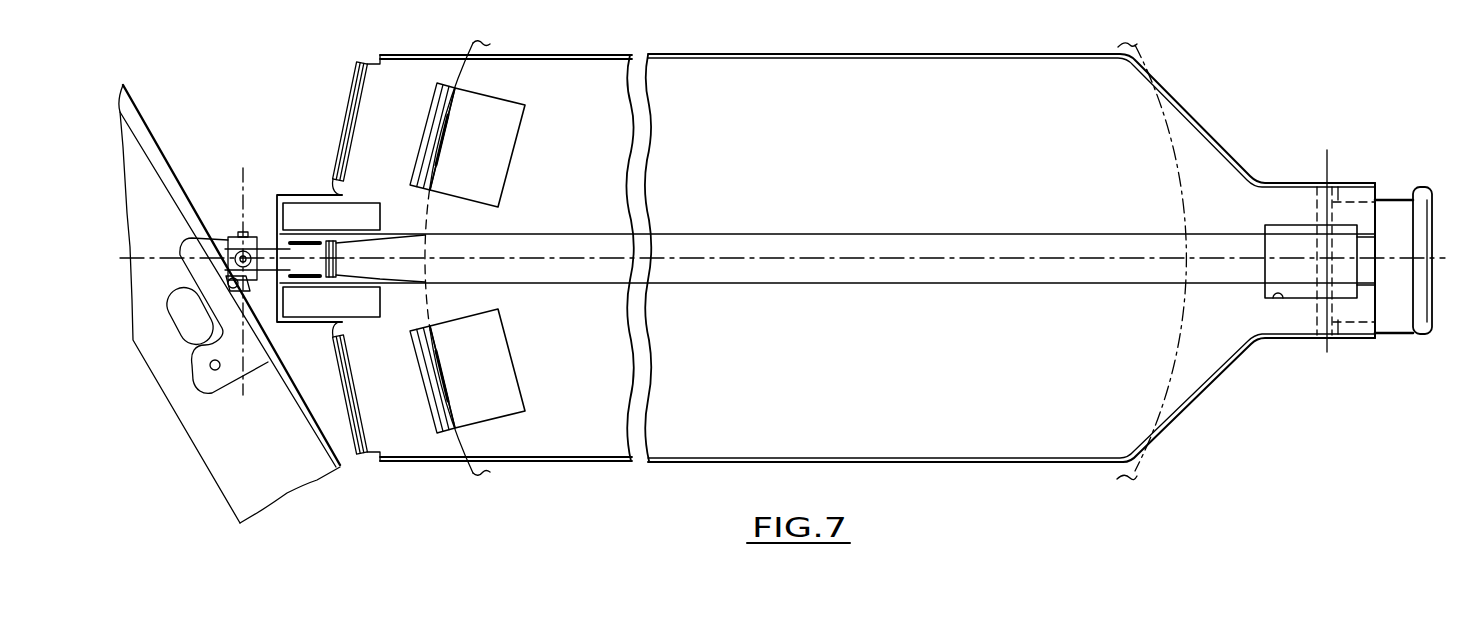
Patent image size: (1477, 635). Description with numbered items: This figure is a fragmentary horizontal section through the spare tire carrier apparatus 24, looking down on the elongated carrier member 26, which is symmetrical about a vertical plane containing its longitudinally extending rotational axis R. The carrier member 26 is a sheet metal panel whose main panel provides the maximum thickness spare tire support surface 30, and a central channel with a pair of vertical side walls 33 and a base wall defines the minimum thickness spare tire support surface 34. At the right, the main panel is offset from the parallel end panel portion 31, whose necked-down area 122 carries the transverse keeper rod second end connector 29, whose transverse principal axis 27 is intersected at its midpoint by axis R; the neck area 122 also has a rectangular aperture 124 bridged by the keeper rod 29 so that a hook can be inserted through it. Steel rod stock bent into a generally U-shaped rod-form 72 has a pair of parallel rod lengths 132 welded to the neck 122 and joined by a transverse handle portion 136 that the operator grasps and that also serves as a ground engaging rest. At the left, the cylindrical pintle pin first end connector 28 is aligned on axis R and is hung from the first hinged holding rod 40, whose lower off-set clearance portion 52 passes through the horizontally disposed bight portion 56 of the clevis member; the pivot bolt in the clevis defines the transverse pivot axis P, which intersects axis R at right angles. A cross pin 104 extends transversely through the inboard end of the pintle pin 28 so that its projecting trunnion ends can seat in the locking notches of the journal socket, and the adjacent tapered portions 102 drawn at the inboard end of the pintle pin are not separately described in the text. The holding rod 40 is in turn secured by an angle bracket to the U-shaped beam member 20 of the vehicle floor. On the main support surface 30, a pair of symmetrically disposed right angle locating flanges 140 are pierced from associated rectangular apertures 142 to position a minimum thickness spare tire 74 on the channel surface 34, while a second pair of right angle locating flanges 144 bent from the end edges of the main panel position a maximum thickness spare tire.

The U-shaped beam member 20 is at (175, 167).
The off-set clearance portion 52 is at (224, 240).
The bight portion 56 is at (253, 236).
The pintle pin first end connector 28 is at (272, 262).
The vertical side walls 33 is at (948, 233).
The minimum thickness spare tire support surface 34 is at (877, 247).
The cross pin 104 is at (340, 262).
The tapered shaft end 102 is at (399, 257).
The first hinged holding rod 40 is at (262, 322).
The pivot axis P is at (244, 377).
The locating flanges 144 is at (356, 119).
The spare tire carrier apparatus 24 is at (903, 44).
The rectangular apertures 142 is at (512, 160).
The locating flanges 140 is at (447, 113).
The maximum thickness spare tire support surface 30 is at (753, 73).
The carrier member 26 is at (1018, 53).
The offset surface portion 31 is at (1203, 152).
The rotational axis R is at (1013, 258).
The minimum thickness spare tire 74 is at (1137, 467).
The transverse principal axis 27 is at (1330, 163).
The necked-down area 122 is at (1293, 320).
The keeper rod second end connector 29 is at (1320, 238).
The rectangular aperture 124 is at (1277, 298).
The parallel rod lengths 132 is at (1397, 197).
The transverse handle portion 136 is at (1432, 223).
The U-shaped rod-form 72 is at (1433, 303).